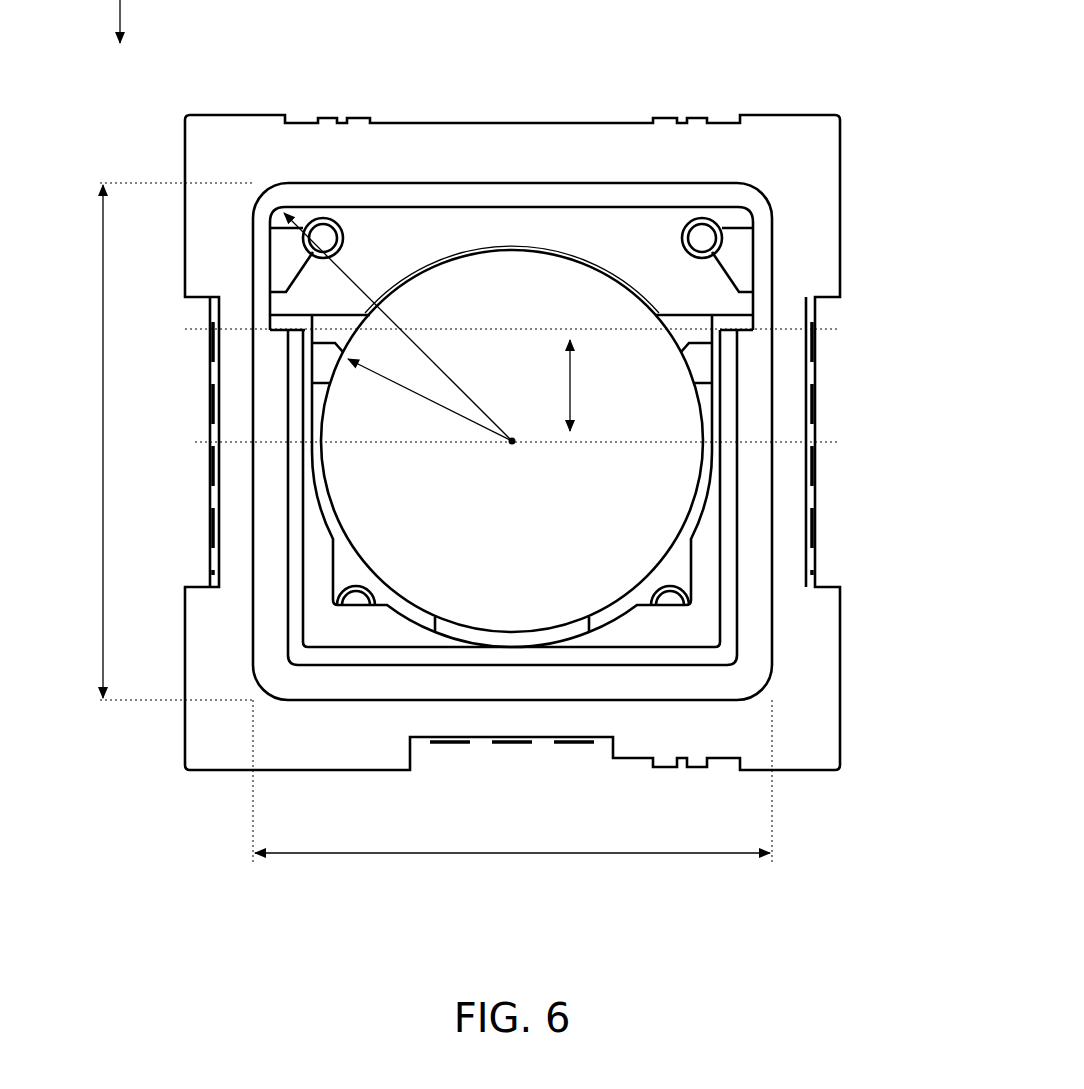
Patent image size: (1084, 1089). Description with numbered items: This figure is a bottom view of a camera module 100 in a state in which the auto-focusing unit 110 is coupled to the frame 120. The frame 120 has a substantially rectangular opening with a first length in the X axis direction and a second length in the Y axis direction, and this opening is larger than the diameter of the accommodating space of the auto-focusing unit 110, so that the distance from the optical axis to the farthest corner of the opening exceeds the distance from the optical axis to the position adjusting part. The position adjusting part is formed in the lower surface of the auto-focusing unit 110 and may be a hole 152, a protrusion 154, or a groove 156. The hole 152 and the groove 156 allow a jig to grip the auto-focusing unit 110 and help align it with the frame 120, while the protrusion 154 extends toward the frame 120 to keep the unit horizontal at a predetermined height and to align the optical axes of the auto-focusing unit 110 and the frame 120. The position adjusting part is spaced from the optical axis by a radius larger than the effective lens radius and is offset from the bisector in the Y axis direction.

The camera module 100 is at (814, 70).
The auto-focusing unit 110 is at (612, 232).
The frame 120 is at (815, 262).
The hole 152 is at (338, 336).
The protrusion 154 is at (700, 362).
The groove 156 is at (702, 233).